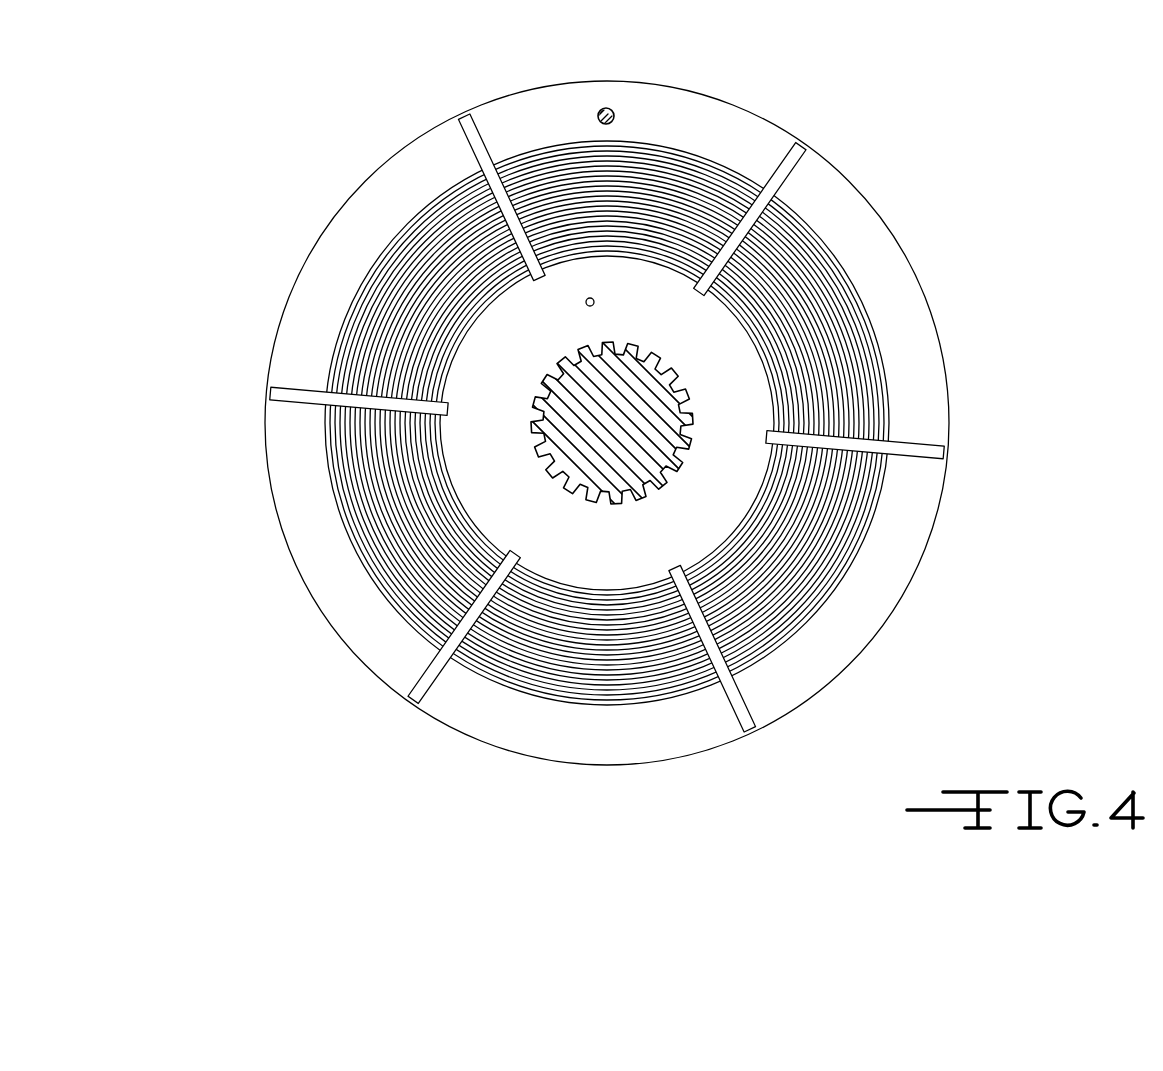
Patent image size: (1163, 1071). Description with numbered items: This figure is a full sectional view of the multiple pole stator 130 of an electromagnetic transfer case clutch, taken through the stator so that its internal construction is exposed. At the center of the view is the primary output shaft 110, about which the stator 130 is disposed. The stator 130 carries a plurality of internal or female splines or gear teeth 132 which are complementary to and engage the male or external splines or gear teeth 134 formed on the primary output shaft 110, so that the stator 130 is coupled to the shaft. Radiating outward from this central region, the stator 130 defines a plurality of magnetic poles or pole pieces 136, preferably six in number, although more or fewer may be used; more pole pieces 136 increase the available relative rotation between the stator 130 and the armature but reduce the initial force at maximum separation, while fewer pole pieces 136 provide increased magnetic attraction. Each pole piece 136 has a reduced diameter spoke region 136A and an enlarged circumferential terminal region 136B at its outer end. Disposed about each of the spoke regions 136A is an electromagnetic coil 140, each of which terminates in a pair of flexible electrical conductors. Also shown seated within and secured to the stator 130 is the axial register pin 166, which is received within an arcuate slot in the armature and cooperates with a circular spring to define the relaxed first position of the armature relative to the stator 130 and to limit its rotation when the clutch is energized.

The primary output shaft 110 is at (514, 581).
The multiple pole stator 130 is at (952, 150).
The internal or female splines or gear teeth 132 is at (537, 448).
The male or external splines or gear teeth 134 is at (598, 473).
The magnetic poles or pole pieces 136 is at (1002, 258).
The reduced diameter spoke region 136A is at (830, 318).
The enlarged circumferential terminal region 136B is at (930, 380).
The electromagnetic coil 140 is at (383, 300).
The axial register pin 166 is at (606, 108).